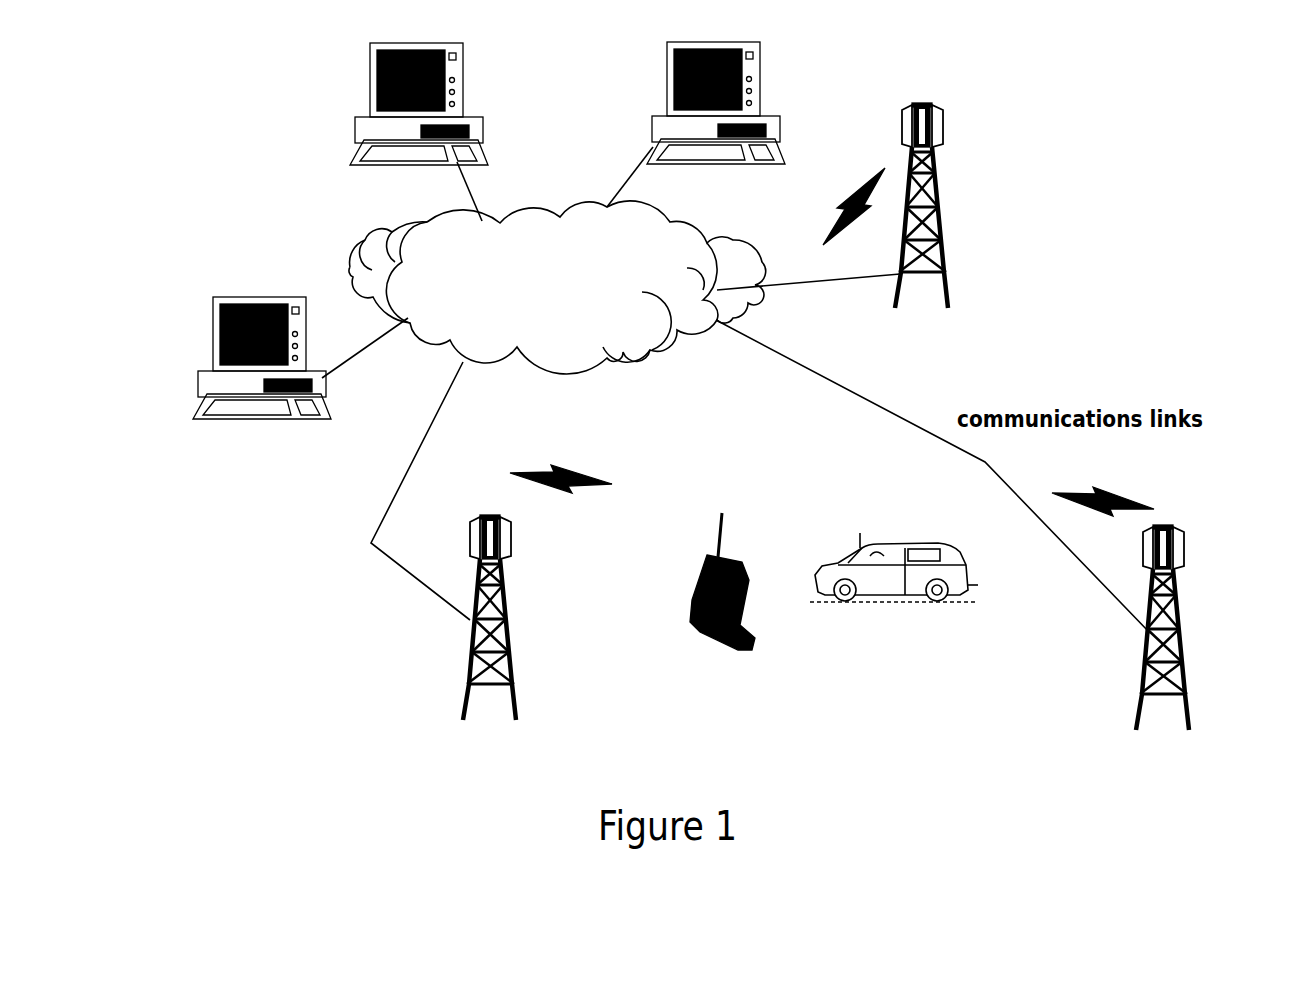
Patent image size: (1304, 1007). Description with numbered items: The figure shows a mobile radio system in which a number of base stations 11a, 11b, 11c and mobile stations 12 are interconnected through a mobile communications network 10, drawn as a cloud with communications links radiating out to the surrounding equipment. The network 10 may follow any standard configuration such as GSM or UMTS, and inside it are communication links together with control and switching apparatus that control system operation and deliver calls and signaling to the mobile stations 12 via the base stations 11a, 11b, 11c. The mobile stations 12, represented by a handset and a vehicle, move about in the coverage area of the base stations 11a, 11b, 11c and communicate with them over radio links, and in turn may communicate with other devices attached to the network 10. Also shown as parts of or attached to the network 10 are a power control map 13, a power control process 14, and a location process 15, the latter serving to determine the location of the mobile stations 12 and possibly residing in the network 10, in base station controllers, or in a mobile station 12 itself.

The mobile communications network 10 is at (557, 294).
The base station 11a is at (951, 274).
The base station 11b is at (1183, 607).
The base station 11c is at (464, 672).
The mobile station 12 is at (741, 612).
The power control map 13 is at (237, 291).
The power control process 14 is at (474, 120).
The location process 15 is at (774, 119).